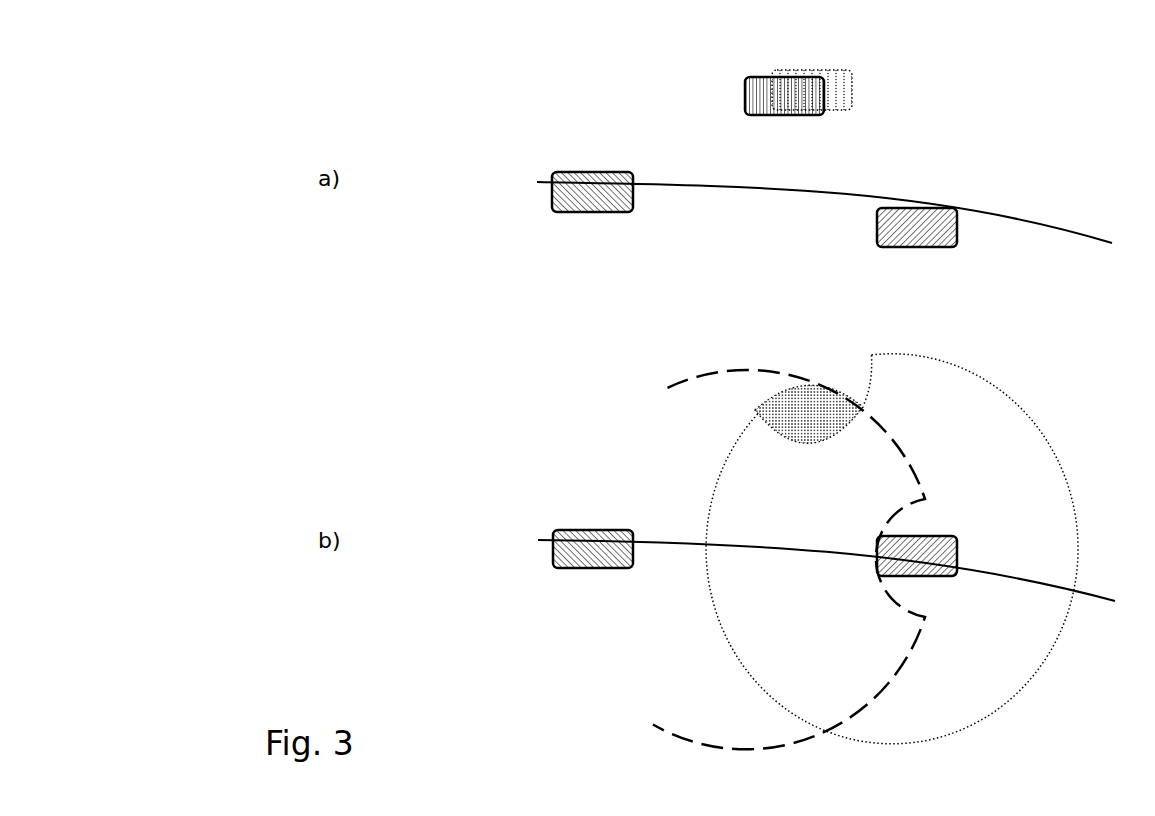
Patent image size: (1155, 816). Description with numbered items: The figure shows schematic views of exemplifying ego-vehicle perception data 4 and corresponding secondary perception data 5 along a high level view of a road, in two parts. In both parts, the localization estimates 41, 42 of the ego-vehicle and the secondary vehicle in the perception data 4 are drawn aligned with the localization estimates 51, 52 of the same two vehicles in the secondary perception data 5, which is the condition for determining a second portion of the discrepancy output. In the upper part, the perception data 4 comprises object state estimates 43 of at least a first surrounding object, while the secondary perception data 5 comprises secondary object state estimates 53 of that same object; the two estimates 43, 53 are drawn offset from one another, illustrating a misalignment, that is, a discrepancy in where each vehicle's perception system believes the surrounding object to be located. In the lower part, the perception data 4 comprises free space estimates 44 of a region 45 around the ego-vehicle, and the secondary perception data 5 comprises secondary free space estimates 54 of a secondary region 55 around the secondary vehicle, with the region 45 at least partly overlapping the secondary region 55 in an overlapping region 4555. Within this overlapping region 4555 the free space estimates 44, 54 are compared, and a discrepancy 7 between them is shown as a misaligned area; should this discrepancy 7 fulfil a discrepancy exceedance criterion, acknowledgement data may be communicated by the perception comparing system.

The ego-vehicle perception data 4 is at (686, 424).
The localization estimate of the vehicle 41 is at (540, 409).
The localization estimate of the secondary vehicle 42 is at (875, 247).
The object state estimates 43 is at (743, 115).
The free space estimates 44 is at (728, 571).
The region around the vehicle 45 is at (658, 743).
The secondary perception data 5 is at (905, 412).
The localization estimate of the vehicle in the secondary perception data 51 is at (553, 210).
The localization estimate of the secondary vehicle in the secondary perception data 52 is at (961, 431).
The secondary object state estimates 53 is at (858, 102).
The secondary free space estimates 54 is at (905, 554).
The secondary region around the secondary vehicle 55 is at (1012, 708).
The overlapping region 4555 is at (760, 605).
The discrepancy 7 is at (777, 413).